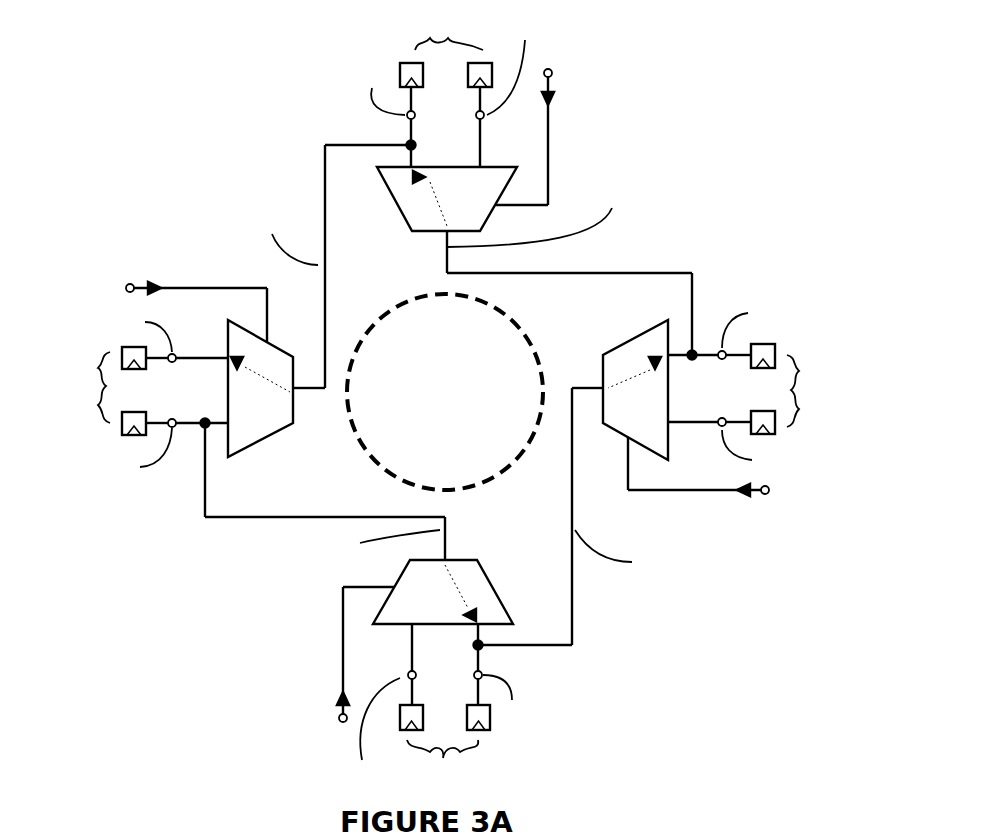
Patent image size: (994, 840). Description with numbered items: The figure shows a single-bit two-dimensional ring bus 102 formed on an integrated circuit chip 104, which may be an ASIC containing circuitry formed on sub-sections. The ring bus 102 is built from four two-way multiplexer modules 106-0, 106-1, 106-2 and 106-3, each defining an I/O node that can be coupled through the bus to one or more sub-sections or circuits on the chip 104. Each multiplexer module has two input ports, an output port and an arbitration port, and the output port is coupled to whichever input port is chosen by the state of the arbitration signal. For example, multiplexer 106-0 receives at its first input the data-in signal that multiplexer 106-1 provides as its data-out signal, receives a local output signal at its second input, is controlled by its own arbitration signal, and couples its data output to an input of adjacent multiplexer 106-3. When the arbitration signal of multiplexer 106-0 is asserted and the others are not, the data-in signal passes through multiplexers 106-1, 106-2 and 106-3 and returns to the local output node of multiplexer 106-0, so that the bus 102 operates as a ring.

The ring bus 102 is at (366, 455).
The integrated circuit chip 104 is at (768, 160).
The multiplexer module 106-0 is at (243, 452).
The multiplexer module 106-1 is at (490, 575).
The multiplexer module 106-2 is at (630, 335).
The multiplexer module 106-3 is at (398, 218).